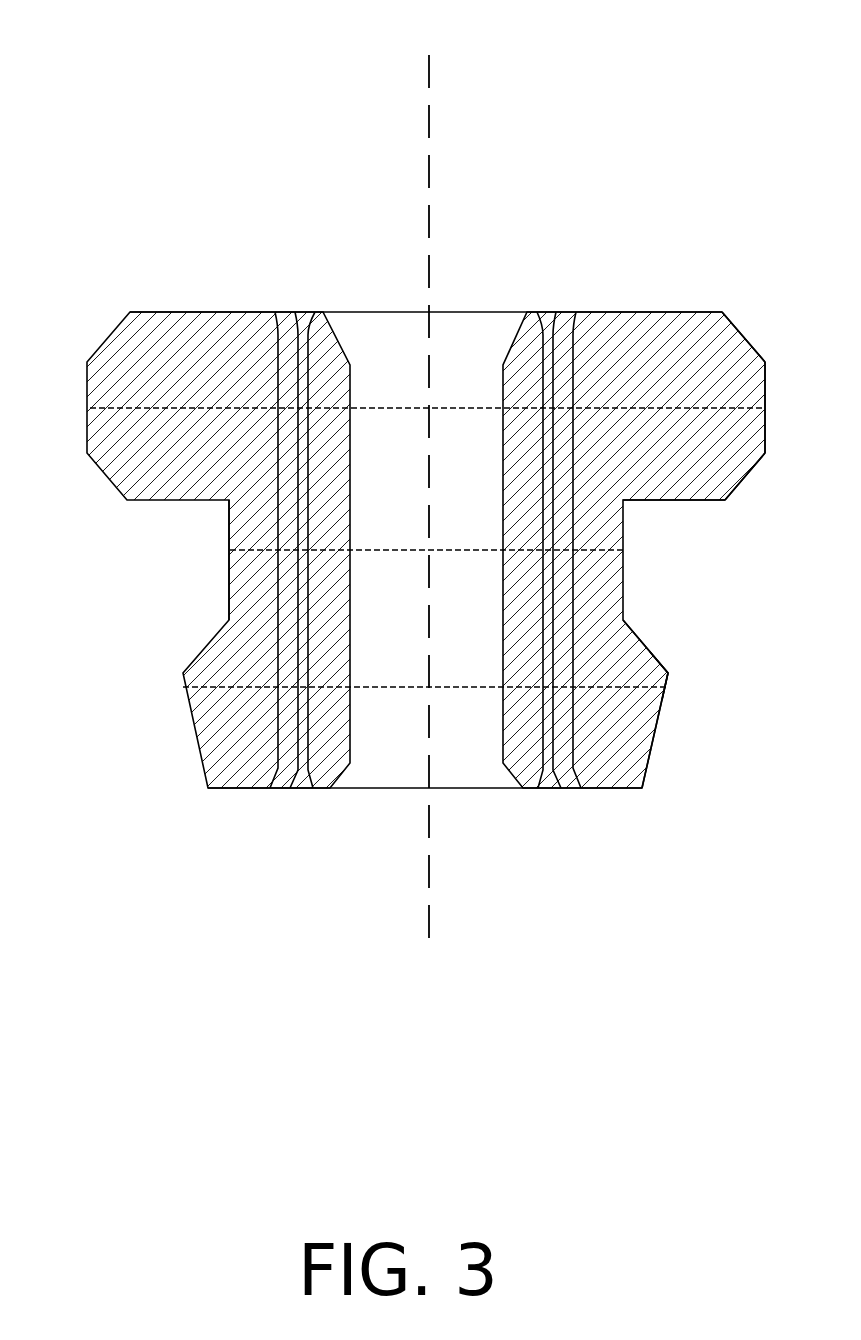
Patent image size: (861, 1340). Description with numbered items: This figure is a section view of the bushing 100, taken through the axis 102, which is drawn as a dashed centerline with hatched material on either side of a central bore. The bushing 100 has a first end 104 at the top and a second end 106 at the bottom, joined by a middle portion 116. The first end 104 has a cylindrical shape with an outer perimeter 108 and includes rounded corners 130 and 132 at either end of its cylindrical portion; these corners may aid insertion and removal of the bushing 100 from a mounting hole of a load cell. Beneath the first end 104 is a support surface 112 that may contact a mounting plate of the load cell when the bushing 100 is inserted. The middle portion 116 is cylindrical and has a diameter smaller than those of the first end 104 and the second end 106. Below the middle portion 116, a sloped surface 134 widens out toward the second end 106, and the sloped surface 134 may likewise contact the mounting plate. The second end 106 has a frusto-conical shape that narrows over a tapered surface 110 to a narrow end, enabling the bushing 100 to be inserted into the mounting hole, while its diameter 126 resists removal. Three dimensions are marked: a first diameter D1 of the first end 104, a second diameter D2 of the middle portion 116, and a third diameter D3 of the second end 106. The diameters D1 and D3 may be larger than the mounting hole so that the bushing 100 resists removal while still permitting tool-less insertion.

The bushing 100 is at (55, 215).
The axis 102 is at (429, 84).
The first end 104 is at (625, 312).
The second end 106 is at (605, 788).
The outer perimeter 108 is at (765, 422).
The tapered surface 110 is at (652, 748).
The support surface 112 is at (668, 500).
The middle portion 116 is at (230, 580).
The diameter of the second end 126 is at (668, 687).
The rounded corner 130 is at (752, 343).
The rounded corner 132 is at (747, 475).
The sloped surface 134 is at (650, 650).
The first diameter D1 is at (120, 408).
The second diameter D2 is at (245, 550).
The third diameter D3 is at (230, 687).